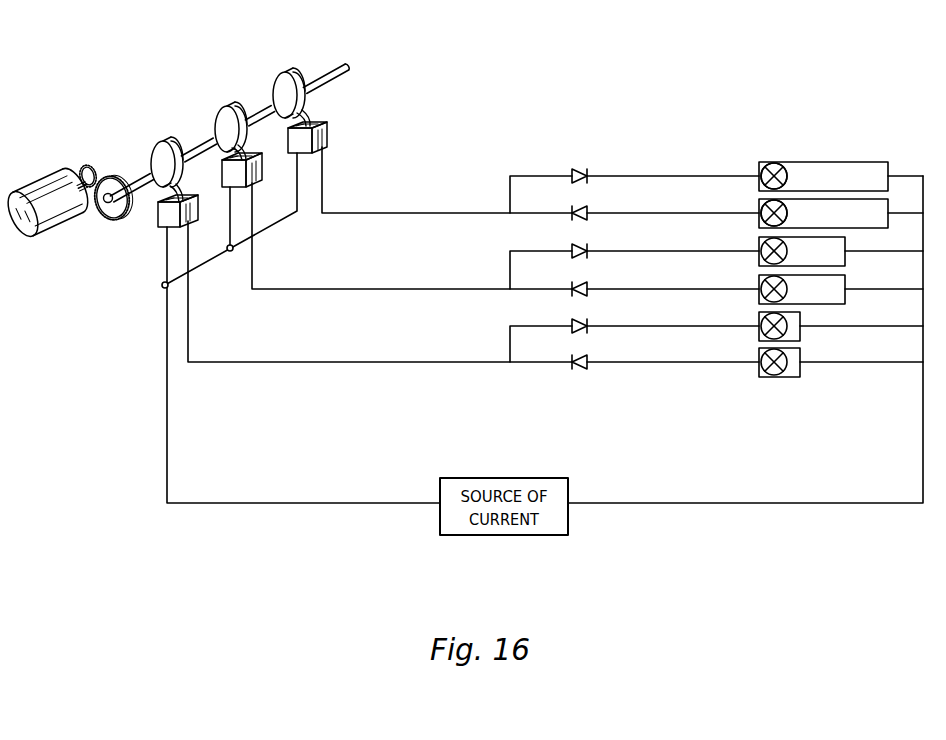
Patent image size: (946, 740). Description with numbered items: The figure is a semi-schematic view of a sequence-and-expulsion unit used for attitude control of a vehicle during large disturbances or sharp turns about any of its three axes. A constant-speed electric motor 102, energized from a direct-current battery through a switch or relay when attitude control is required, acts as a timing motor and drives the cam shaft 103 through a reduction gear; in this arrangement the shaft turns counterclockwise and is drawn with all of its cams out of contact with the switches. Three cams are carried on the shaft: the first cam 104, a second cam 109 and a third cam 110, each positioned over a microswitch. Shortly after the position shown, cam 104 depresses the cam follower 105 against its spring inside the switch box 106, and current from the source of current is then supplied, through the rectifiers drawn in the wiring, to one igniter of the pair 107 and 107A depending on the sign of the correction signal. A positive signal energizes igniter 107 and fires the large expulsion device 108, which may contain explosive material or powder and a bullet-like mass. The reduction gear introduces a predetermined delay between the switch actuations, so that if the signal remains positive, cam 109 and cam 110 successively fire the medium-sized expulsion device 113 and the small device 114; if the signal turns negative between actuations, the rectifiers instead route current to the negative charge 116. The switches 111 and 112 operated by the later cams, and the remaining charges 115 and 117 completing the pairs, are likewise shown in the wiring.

The constant-speed electric motor 102 is at (42, 185).
The cam shaft 103 is at (142, 177).
The cam 104 is at (278, 74).
The cam follower 105 is at (310, 123).
The switch box 106 is at (323, 140).
The igniter 107 is at (773, 172).
The igniter 107A is at (763, 209).
The large expulsion device 108 is at (823, 176).
The cam 109 is at (247, 110).
The cam 110 is at (203, 153).
The switch 111 is at (256, 172).
The switch 112 is at (160, 214).
The medium-sized expulsion device 113 is at (802, 251).
The small expulsion device 114 is at (793, 335).
The indicator 115 is at (823, 213).
The negative charge 116 is at (802, 289).
The indicator 117 is at (792, 372).